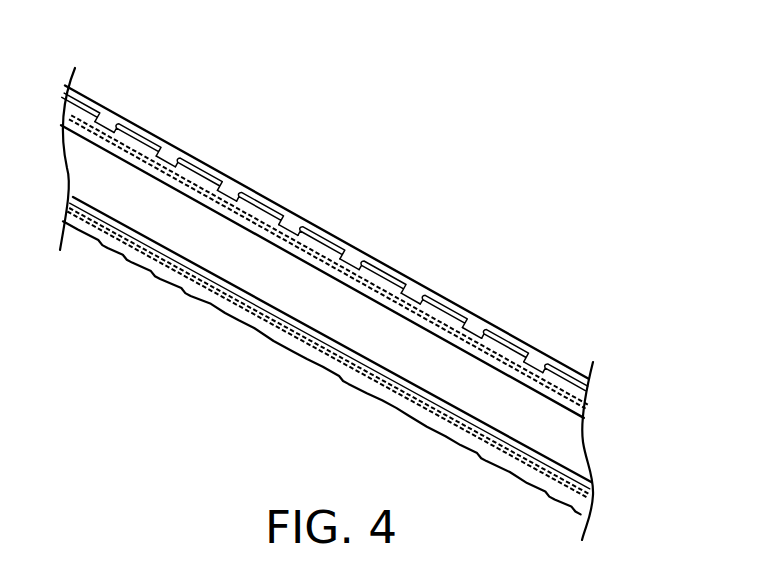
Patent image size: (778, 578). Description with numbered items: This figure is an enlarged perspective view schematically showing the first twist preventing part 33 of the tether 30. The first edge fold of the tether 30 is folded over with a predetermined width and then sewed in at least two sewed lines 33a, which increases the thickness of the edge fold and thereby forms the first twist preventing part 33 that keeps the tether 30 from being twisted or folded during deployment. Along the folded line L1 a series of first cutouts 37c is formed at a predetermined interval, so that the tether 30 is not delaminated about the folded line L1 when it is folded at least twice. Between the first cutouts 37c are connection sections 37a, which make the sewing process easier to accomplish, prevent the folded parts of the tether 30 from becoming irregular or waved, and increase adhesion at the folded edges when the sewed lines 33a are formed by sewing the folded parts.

The tether 30 is at (518, 413).
The first twist preventing part 33 is at (422, 218).
The sewed lines 33a is at (294, 230).
The connection sections 37a is at (428, 291).
The first cutouts 37c is at (348, 247).
The folded line L1 is at (205, 164).